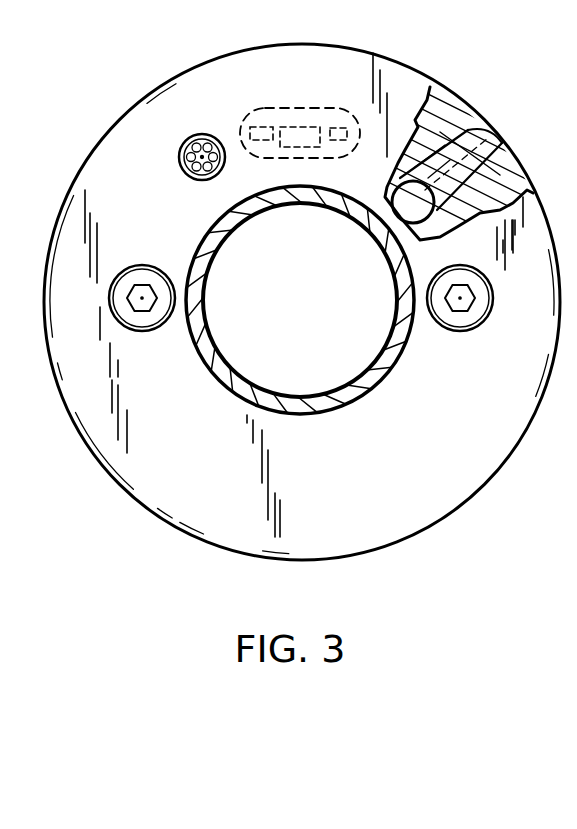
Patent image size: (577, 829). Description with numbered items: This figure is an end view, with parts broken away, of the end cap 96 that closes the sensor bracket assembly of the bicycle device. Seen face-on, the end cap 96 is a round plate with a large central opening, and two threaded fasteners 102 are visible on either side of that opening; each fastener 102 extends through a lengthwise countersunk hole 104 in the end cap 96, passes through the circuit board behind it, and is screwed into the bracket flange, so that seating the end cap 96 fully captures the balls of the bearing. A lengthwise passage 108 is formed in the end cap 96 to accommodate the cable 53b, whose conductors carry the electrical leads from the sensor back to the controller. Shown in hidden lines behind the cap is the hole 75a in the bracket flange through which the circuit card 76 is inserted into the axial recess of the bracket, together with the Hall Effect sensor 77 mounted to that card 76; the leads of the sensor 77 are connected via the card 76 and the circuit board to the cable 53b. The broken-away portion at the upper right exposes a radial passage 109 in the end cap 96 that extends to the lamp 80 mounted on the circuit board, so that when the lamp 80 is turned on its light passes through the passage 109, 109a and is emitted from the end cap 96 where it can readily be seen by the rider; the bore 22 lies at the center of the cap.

The central bore / tubular member 22 is at (307, 393).
The cable 53b is at (185, 167).
The hole 75a is at (297, 113).
The circuit card 76 is at (263, 127).
The Hall Effect sensor 77 is at (302, 140).
The lamp (LED) 80 is at (380, 192).
The end cap 96 is at (171, 430).
The threaded fasteners 102 is at (150, 318).
The countersunk holes 104 is at (148, 273).
The lengthwise passage 108 is at (183, 147).
The radial passage 109 is at (483, 118).
The passage in plate 109a is at (497, 130).